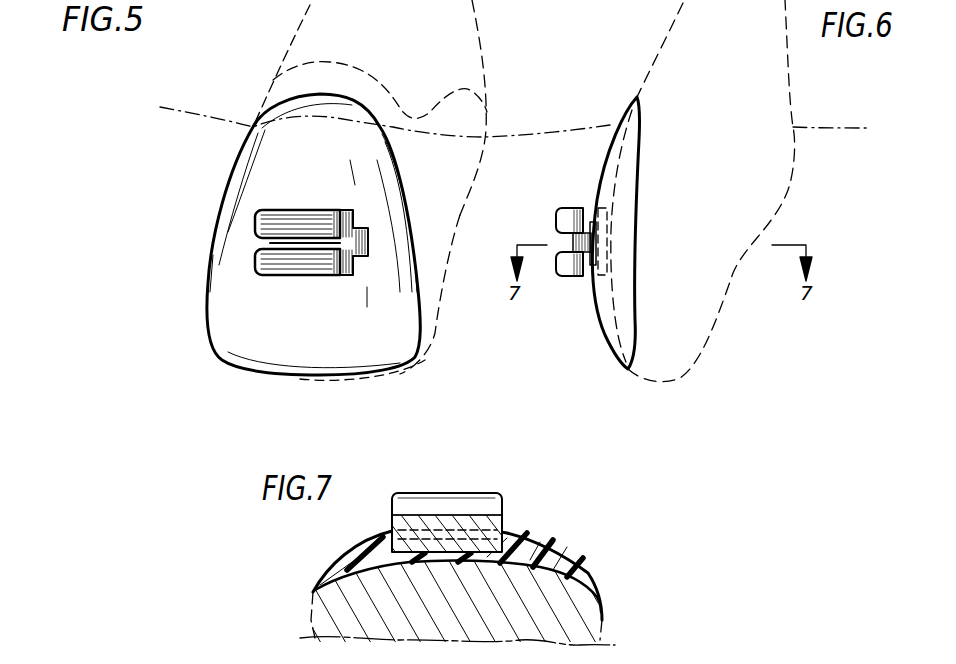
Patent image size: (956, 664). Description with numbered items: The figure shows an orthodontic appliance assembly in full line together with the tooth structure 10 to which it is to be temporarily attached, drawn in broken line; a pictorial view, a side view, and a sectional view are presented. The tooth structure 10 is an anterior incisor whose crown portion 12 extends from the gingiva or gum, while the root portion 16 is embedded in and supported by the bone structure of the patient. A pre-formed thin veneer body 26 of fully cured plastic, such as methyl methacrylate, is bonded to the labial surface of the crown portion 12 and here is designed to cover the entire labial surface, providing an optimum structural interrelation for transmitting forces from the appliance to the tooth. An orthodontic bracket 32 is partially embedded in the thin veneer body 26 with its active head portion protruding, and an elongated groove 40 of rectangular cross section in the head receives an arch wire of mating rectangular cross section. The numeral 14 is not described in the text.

In FIG. 5, the tooth structure 10 is at (240, 363).
In FIG. 6, the tooth structure 10 is at (713, 343).
In FIG. 7, the tooth structure 10 is at (328, 556).
In FIG. 5, the crown portion 12 is at (432, 301).
In FIG. 5, the gingival line 14 is at (200, 115).
In FIG. 5, the root portion 16 is at (468, 40).
In FIG. 5, the thin veneer body 26 is at (242, 317).
In FIG. 6, the thin veneer body 26 is at (606, 158).
In FIG. 7, the thin veneer body 26 is at (573, 555).
In FIG. 5, the orthodontic bracket 32 is at (258, 222).
In FIG. 6, the orthodontic bracket 32 is at (562, 212).
In FIG. 7, the orthodontic bracket 32 is at (502, 495).
In FIG. 5, the elongated groove 40 is at (316, 245).
In FIG. 7, the elongated groove 40 is at (447, 502).